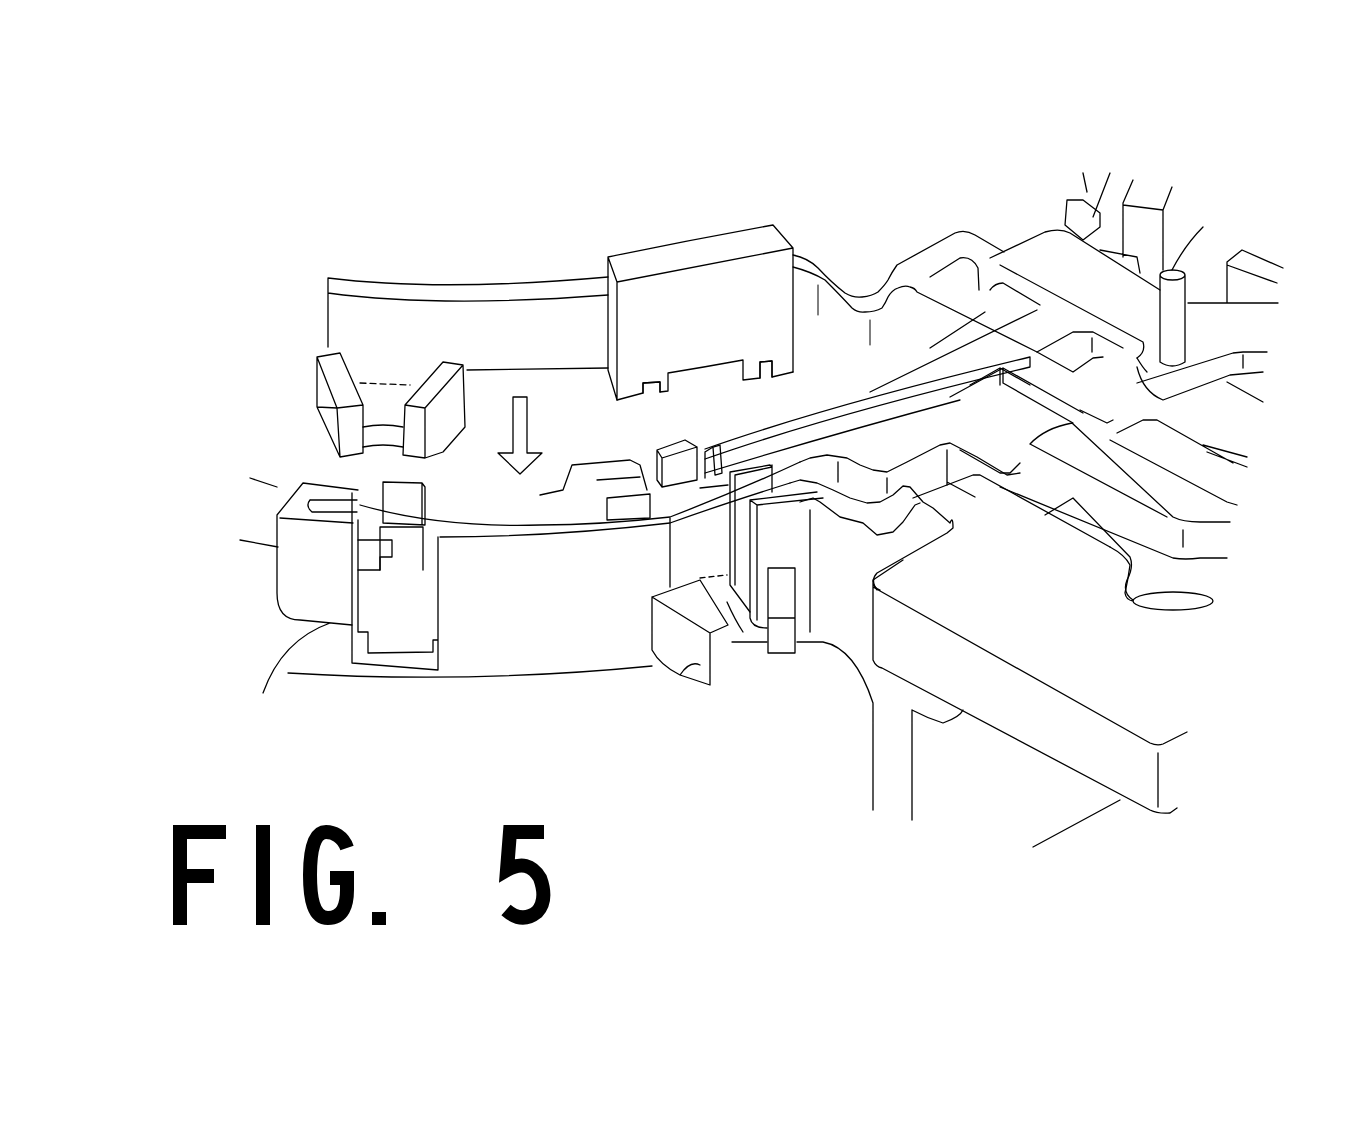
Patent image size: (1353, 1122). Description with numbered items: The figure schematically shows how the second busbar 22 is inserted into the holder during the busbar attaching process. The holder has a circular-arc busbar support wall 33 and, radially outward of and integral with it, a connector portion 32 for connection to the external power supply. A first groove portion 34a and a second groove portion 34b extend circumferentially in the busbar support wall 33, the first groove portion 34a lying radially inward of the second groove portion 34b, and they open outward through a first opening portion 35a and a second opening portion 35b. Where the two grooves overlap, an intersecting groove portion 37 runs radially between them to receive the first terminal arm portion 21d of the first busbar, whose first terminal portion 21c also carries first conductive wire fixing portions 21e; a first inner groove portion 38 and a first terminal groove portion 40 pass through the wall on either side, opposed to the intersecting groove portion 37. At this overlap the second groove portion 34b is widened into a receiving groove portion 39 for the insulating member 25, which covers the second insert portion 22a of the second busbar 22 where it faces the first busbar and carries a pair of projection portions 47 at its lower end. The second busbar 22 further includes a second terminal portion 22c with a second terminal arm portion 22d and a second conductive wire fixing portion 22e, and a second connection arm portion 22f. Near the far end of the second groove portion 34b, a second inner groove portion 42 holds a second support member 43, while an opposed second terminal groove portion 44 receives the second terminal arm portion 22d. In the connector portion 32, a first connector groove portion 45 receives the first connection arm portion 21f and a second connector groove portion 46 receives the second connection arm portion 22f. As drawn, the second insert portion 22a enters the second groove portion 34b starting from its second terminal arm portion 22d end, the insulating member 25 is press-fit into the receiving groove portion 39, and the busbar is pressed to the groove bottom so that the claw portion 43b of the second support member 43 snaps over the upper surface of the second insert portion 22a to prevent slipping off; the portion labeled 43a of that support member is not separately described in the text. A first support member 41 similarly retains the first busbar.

The second busbar 22 is at (428, 262).
The second insert portion 22a is at (483, 290).
The second terminal portion 22c is at (307, 380).
The second terminal arm portion 22d is at (382, 395).
The second conductive wire fixing portion 22e is at (322, 395).
The second connection arm portion 22f is at (1032, 250).
The insulating member 25 is at (688, 253).
The projection portions 47 is at (630, 390).
The first groove portion 34a is at (863, 408).
The second groove portion 34b is at (576, 500).
The first opening portion 35a is at (806, 446).
The second opening portion 35b is at (516, 516).
The intersecting groove portion 37 is at (727, 515).
The first inner groove portion 38 is at (703, 455).
The receiving groove portion 39 is at (641, 508).
The first terminal groove portion 40 is at (743, 547).
The first support member 41 is at (665, 452).
The second inner groove portion 42 is at (368, 503).
The second support member 43 is at (413, 485).
The tab 43a is at (392, 542).
The claw portion 43b is at (407, 520).
The second terminal groove portion 44 is at (395, 658).
The first connector groove portion 45 is at (1205, 444).
The second connector groove portion 46 is at (1100, 532).
The busbar support wall 33 is at (513, 650).
The connector portion 32 is at (1008, 720).
The first terminal portion 21c is at (702, 641).
The first terminal arm portion 21d is at (727, 602).
The first conductive wire fixing portions 21e is at (670, 650).
The first connection arm portion 21f is at (1205, 470).